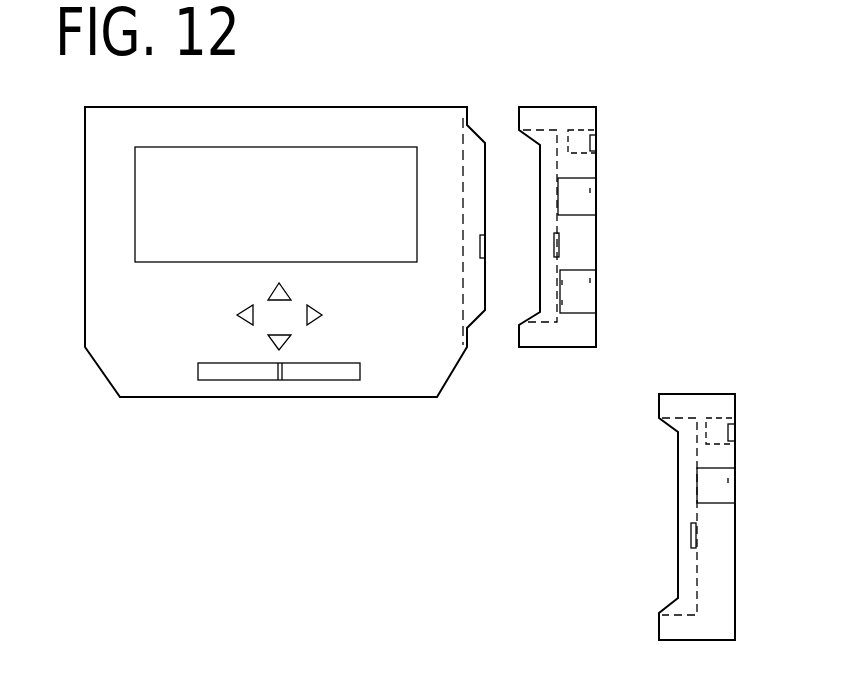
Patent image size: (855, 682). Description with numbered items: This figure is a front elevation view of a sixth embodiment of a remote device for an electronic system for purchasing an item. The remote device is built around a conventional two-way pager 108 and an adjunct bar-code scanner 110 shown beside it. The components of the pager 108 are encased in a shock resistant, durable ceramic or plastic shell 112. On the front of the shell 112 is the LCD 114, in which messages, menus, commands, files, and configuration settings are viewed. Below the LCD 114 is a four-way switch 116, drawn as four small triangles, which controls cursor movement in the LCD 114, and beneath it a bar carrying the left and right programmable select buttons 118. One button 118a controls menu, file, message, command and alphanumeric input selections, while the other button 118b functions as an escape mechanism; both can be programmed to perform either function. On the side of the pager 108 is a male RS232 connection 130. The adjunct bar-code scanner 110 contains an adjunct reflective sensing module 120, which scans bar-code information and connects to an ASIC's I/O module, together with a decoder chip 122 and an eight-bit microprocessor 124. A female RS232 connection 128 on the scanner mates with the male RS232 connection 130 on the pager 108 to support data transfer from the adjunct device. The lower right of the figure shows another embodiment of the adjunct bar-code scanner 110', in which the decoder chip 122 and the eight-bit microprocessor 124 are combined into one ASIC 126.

The two-way pager 108 is at (280, 254).
The adjunct bar-code scanner 110 is at (601, 190).
The adjunct bar-code scanner 110' is at (727, 481).
The shell 112 is at (100, 107).
The LCD 114 is at (278, 183).
The four-way switch 116 is at (237, 315).
The programmable select buttons 118 is at (280, 353).
The button 118a is at (198, 378).
The button 118b is at (360, 370).
The adjunct reflective sensing module 120 is at (596, 145).
The decoder chip 122 is at (596, 200).
The 8-bit microprocessor 124 is at (596, 300).
The ASIC 126 is at (735, 480).
The female RS232 connection 128 is at (560, 245).
The male RS232 connection 130 is at (485, 245).